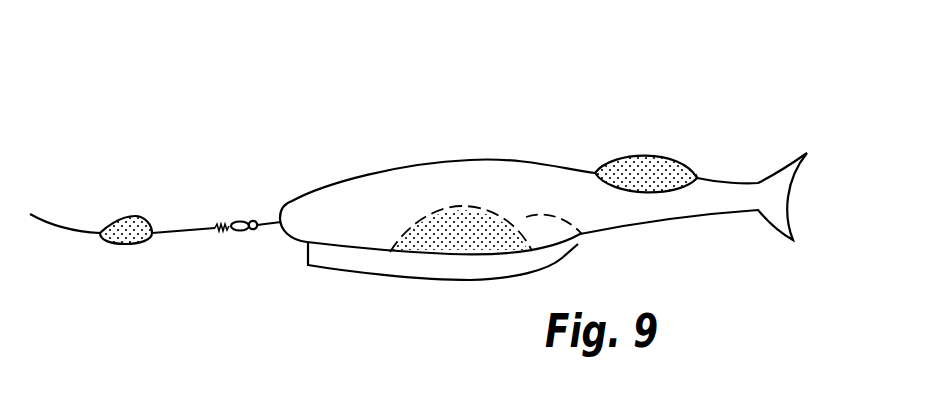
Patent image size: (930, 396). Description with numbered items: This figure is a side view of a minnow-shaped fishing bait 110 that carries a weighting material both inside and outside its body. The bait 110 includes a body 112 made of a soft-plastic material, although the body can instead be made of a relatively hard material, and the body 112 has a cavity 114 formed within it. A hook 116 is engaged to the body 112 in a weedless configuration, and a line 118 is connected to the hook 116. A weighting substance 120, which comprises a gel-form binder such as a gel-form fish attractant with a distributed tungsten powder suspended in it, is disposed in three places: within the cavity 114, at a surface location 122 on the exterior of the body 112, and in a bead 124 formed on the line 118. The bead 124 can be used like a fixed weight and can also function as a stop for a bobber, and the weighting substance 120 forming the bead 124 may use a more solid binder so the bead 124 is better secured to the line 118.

The fishing bait 110 is at (529, 129).
The body 112 is at (413, 165).
The cavity 114 is at (598, 243).
The hook 116 is at (318, 270).
The line 118 is at (216, 244).
The weighting substance 120 is at (130, 244).
The surface location 122 is at (688, 170).
The bead 124 is at (134, 216).